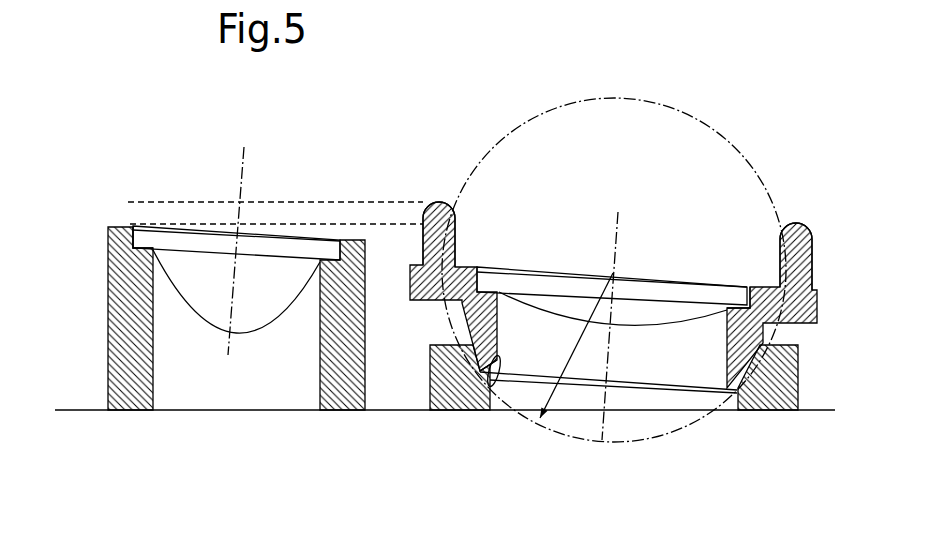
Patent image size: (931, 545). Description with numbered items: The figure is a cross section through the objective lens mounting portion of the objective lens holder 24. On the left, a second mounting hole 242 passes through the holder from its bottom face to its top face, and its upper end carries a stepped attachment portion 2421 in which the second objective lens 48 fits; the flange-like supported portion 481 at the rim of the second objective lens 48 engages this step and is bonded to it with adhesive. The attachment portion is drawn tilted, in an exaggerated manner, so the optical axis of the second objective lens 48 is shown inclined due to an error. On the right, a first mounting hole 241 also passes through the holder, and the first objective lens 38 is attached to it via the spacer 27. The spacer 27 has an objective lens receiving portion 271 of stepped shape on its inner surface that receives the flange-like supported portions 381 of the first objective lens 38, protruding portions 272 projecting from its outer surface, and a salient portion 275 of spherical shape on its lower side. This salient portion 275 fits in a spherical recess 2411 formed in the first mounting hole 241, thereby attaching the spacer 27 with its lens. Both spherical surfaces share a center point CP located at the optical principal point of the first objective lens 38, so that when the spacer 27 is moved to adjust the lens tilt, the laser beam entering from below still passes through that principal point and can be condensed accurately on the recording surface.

The objective lens holder 24 is at (403, 205).
The first mounting hole 241 is at (742, 410).
The recess 2411 is at (503, 358).
The second mounting hole 242 is at (150, 322).
The stepped attachment portion 2421 is at (128, 237).
The spacer 27 is at (460, 310).
The objective lens receiving portion 271 is at (745, 305).
The protruding portions 272 is at (443, 203).
The salient portion 275 is at (470, 368).
The first objective lens 38 is at (558, 278).
The supported portions 381 is at (488, 282).
The second objective lens 48 is at (192, 240).
The supported portion 481 is at (135, 238).
The center point CP is at (613, 273).